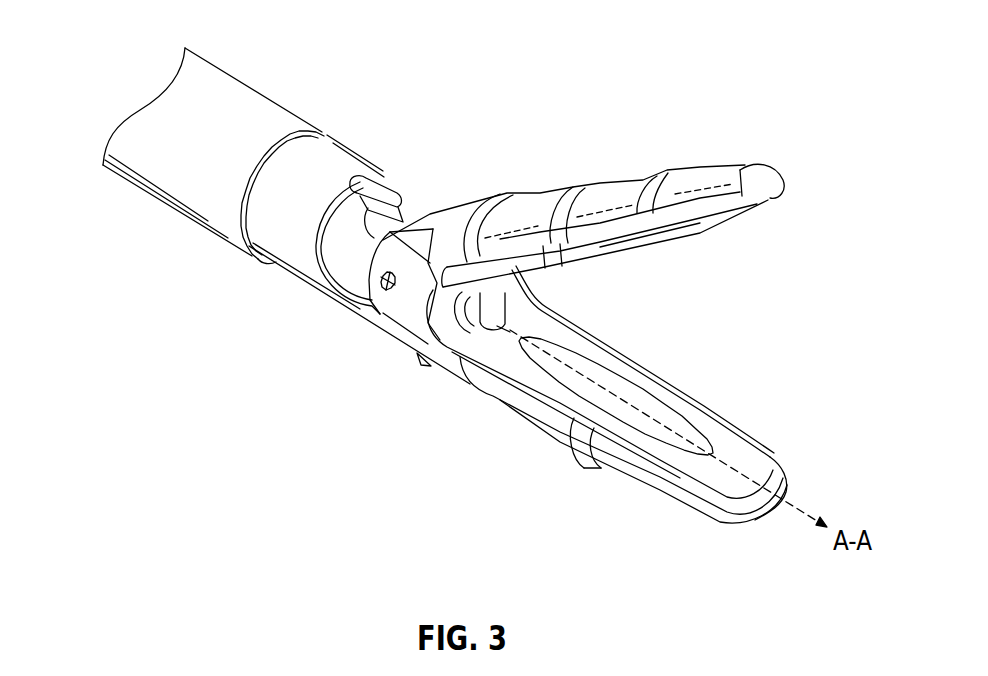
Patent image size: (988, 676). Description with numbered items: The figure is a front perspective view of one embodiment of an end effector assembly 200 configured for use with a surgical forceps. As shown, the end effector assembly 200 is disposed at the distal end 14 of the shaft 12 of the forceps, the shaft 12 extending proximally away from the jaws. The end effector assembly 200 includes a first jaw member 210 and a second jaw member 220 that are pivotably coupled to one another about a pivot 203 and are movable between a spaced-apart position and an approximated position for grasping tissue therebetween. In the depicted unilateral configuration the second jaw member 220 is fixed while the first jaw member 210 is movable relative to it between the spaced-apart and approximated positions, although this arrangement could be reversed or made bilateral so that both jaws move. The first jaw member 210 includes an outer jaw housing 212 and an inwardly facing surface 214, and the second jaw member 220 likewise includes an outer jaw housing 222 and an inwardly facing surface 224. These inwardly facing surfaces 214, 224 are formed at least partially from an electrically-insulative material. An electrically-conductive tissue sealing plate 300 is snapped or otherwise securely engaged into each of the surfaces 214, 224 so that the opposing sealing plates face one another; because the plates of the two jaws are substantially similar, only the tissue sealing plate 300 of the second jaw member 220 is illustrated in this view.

The shaft 12 is at (231, 94).
The distal end 14 is at (341, 164).
The end effector assembly 200 is at (792, 137).
The pivot 203 is at (383, 284).
The first jaw member 210 is at (619, 214).
The outer jaw housing 212 is at (781, 182).
The inwardly facing surface 214 is at (717, 217).
The second jaw member 220 is at (643, 394).
The outer jaw housing 222 is at (787, 487).
The inwardly facing surface 224 is at (553, 333).
The tissue sealing plate 300 is at (637, 397).